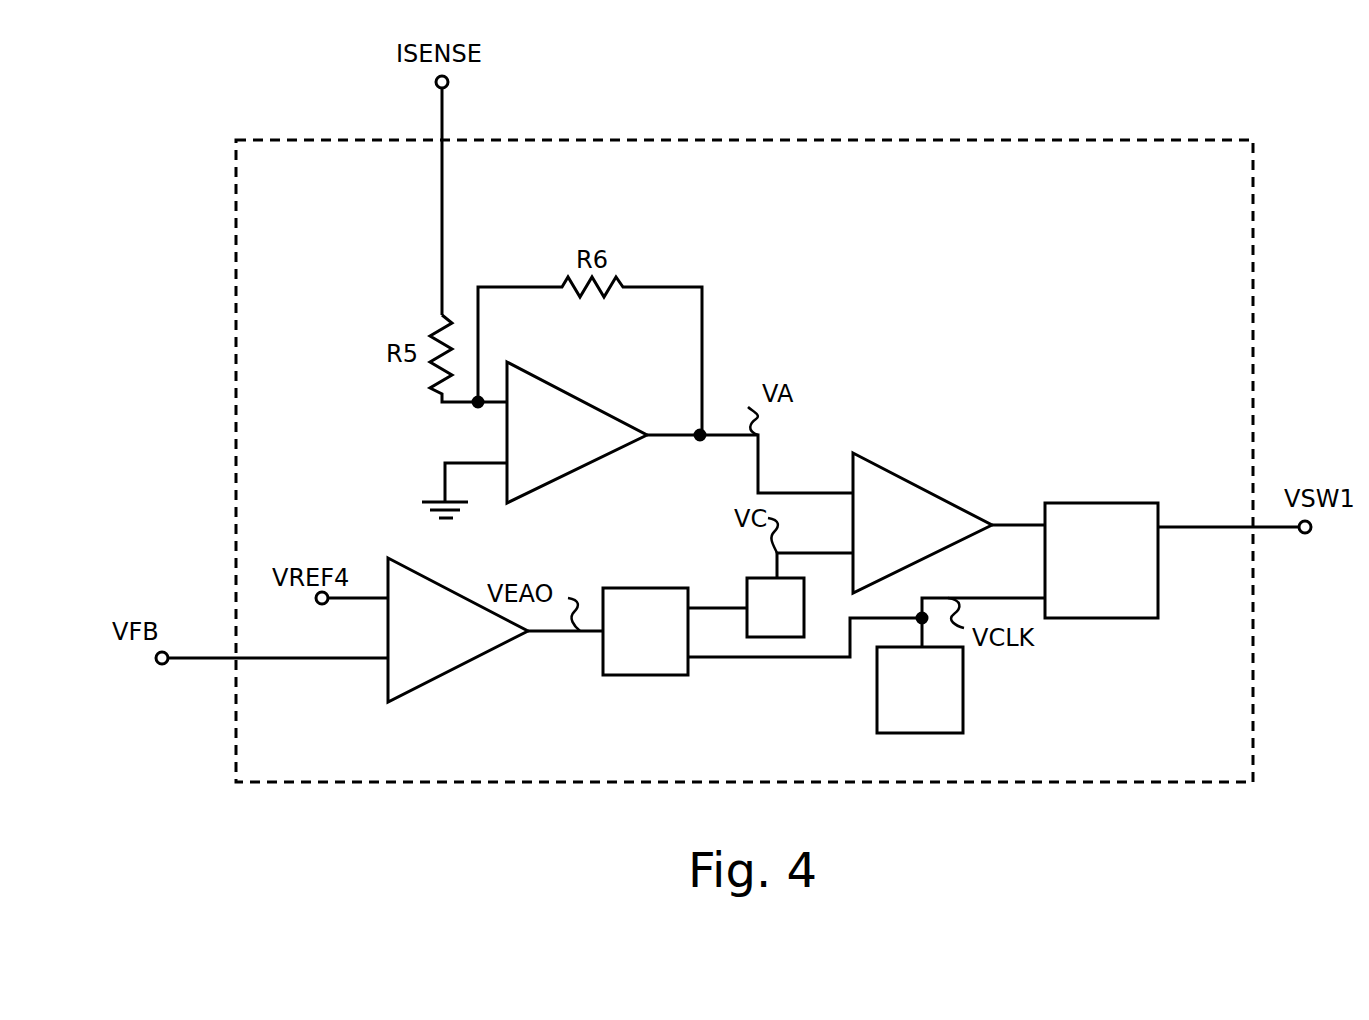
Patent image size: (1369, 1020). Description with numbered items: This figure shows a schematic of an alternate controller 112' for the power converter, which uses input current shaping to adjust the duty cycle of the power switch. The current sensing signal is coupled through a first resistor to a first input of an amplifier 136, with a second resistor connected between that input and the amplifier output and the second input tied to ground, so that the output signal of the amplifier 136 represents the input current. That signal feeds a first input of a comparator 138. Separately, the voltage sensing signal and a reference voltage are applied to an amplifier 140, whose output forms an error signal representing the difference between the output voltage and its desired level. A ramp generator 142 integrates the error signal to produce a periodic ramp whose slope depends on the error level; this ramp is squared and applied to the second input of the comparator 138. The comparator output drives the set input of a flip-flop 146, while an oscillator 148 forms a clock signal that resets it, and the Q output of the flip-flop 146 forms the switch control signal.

The controller 112' is at (744, 436).
The amplifier 136 is at (592, 462).
The comparator 138 is at (851, 456).
The amplifier 140 is at (466, 663).
The ramp generator 142 is at (650, 675).
The flip-flop 146 is at (1135, 618).
The oscillator 148 is at (747, 590).